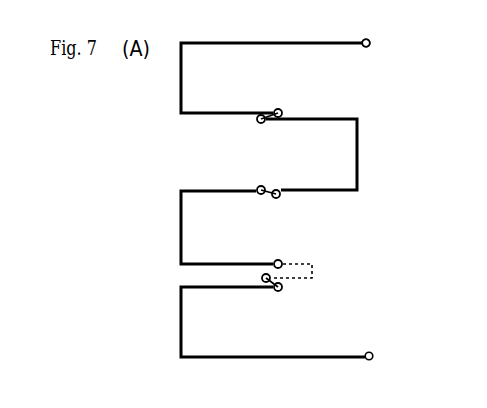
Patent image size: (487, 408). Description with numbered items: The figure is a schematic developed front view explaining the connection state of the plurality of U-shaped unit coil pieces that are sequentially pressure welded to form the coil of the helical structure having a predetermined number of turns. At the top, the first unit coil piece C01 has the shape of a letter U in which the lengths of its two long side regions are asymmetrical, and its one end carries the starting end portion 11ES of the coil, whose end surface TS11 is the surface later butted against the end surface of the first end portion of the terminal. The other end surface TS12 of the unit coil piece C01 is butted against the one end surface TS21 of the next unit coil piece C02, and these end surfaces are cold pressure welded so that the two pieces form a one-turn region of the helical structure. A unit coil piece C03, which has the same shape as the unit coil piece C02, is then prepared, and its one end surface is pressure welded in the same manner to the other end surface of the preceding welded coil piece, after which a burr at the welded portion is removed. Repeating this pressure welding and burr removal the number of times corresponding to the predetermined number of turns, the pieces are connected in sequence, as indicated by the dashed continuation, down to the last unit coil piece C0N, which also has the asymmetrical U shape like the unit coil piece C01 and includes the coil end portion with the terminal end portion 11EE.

The unit coil piece C01 is at (283, 45).
The unit coil piece C02 is at (359, 135).
The unit coil piece C03 is at (180, 212).
The last unit coil piece C0N is at (180, 330).
The end surface TS11 is at (411, 52).
The end surface TS12 is at (275, 109).
The end surface TS21 is at (258, 124).
The starting end portion 11ES is at (370, 41).
The terminal end portion 11EE is at (372, 352).